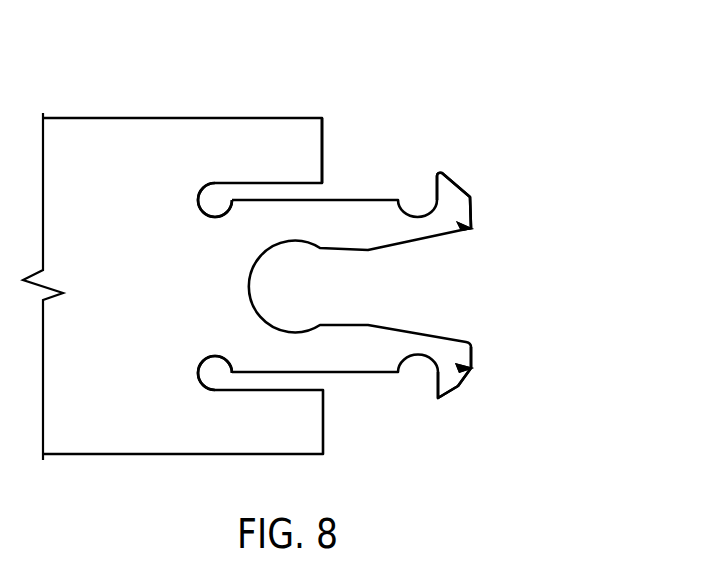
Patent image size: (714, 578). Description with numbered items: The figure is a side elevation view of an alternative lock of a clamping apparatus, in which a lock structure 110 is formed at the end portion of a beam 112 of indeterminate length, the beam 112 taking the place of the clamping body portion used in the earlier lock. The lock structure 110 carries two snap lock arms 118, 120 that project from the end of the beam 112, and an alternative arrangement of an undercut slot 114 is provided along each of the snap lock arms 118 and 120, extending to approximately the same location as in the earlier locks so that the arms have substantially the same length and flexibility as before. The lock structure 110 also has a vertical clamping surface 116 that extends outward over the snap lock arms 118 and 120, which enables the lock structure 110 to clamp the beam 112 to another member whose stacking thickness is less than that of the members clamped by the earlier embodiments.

The lock structure 110 is at (484, 138).
The beam 112 is at (130, 140).
The undercut slot 114 is at (198, 200).
The vertical clamping surface 116 is at (322, 135).
The snap lock arm 118 is at (476, 230).
The snap lock arm 120 is at (476, 370).